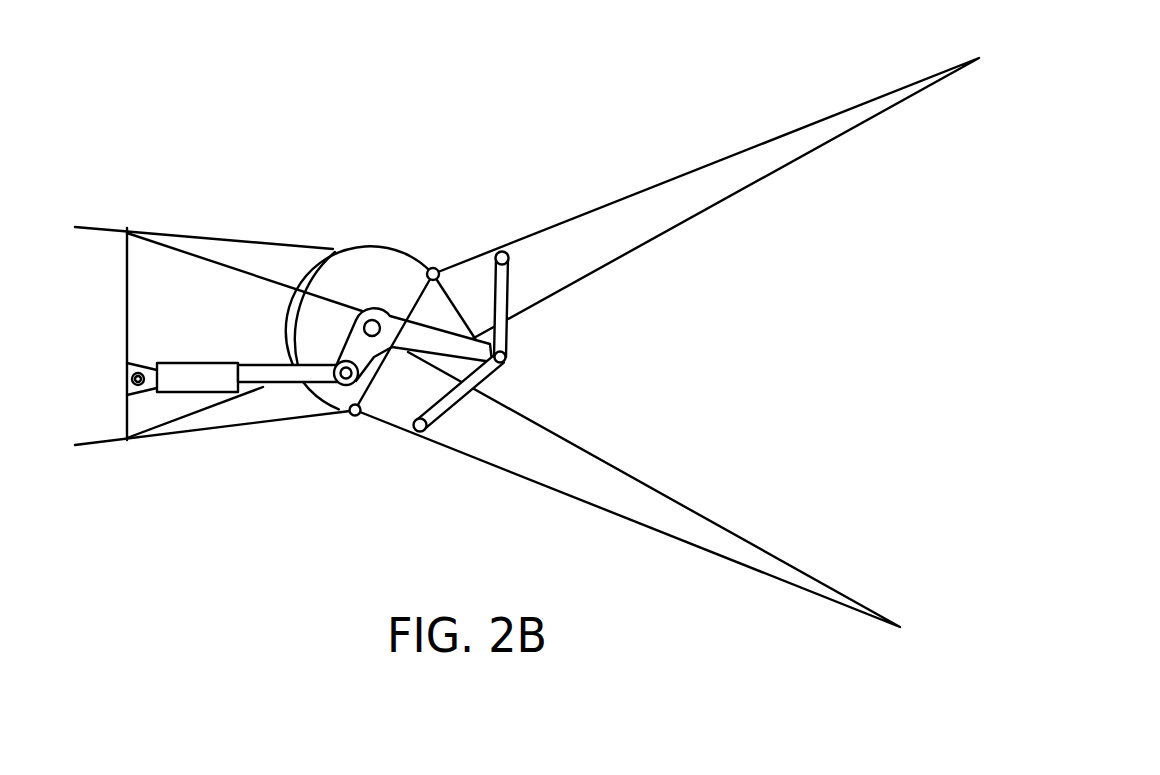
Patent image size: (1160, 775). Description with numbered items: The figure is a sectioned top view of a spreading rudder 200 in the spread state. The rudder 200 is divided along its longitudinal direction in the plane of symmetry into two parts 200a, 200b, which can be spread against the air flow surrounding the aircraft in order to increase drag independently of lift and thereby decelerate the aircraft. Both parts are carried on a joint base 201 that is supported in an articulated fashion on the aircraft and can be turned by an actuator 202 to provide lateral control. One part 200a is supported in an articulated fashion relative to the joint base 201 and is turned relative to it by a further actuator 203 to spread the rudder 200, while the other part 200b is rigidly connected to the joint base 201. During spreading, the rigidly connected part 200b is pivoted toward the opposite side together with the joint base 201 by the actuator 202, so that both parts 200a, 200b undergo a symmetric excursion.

The spreading rudder 200 is at (527, 342).
The articulated part of the rudder 200a is at (658, 195).
The rigidly connected part of the rudder 200b is at (653, 520).
The joint base 201 is at (360, 258).
The actuator 202 is at (195, 385).
The actuator 203 is at (500, 355).